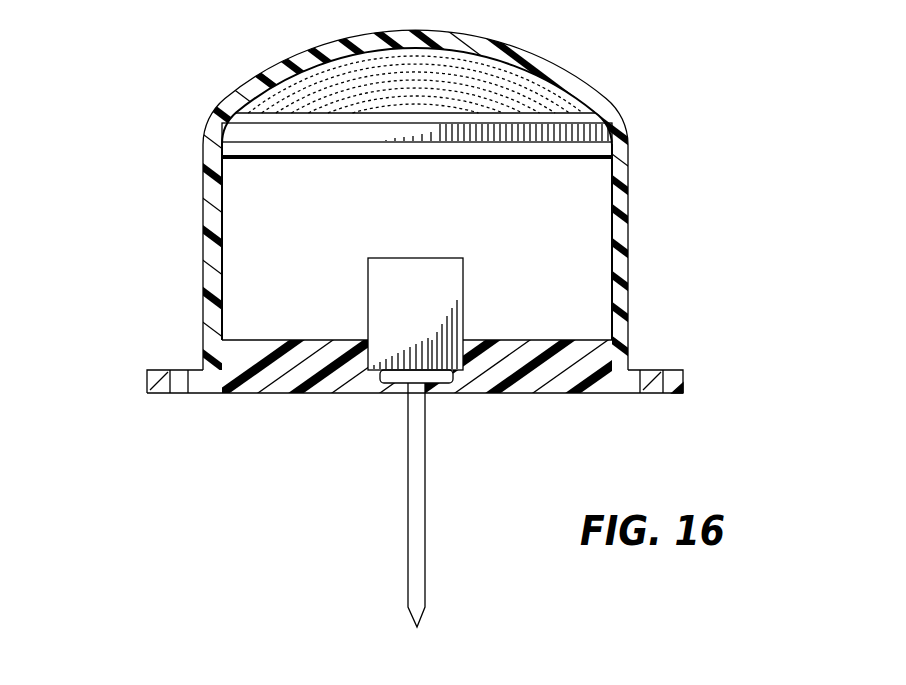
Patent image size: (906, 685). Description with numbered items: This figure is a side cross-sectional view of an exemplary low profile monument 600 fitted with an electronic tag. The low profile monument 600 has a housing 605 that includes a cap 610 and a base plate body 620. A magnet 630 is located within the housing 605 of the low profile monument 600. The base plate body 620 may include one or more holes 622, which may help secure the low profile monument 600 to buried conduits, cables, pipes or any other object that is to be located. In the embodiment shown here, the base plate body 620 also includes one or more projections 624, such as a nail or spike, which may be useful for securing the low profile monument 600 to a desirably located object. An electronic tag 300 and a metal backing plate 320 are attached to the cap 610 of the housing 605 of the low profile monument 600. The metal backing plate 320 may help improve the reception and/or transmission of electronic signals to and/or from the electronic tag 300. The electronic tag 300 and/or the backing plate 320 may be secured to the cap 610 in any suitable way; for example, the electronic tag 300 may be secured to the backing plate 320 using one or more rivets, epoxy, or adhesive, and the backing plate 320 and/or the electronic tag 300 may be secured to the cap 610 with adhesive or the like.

The low profile monument 600 is at (226, 56).
The housing 605 is at (164, 188).
The cap 610 is at (628, 236).
The electronic tag 300 is at (548, 130).
The metal backing plate 320 is at (598, 150).
The magnet 630 is at (388, 281).
The base plate body 620 is at (515, 397).
The holes 622 is at (650, 378).
The projections 624 is at (407, 488).